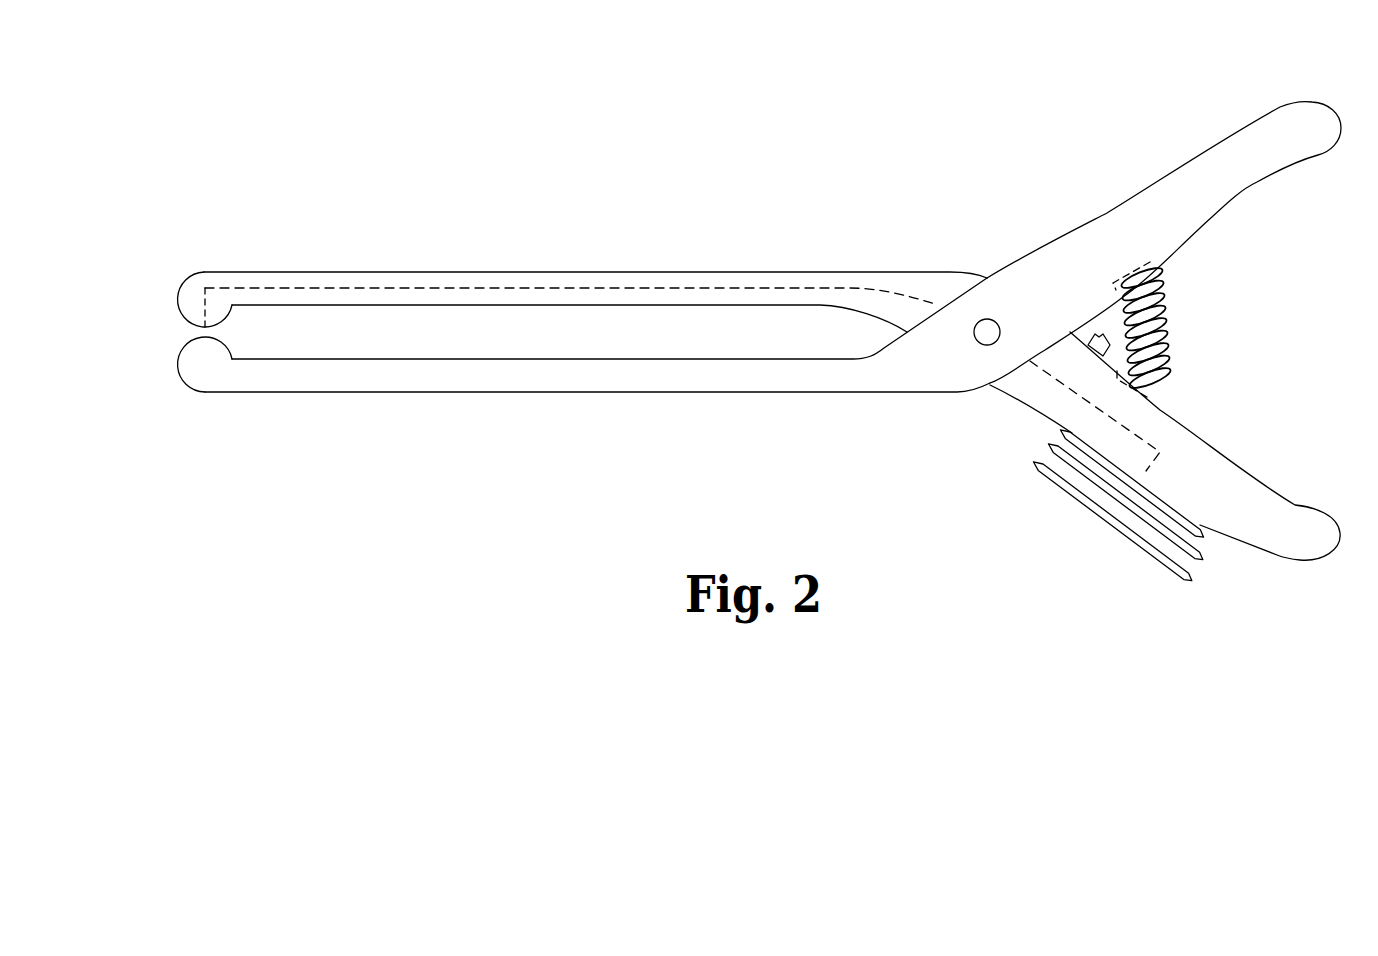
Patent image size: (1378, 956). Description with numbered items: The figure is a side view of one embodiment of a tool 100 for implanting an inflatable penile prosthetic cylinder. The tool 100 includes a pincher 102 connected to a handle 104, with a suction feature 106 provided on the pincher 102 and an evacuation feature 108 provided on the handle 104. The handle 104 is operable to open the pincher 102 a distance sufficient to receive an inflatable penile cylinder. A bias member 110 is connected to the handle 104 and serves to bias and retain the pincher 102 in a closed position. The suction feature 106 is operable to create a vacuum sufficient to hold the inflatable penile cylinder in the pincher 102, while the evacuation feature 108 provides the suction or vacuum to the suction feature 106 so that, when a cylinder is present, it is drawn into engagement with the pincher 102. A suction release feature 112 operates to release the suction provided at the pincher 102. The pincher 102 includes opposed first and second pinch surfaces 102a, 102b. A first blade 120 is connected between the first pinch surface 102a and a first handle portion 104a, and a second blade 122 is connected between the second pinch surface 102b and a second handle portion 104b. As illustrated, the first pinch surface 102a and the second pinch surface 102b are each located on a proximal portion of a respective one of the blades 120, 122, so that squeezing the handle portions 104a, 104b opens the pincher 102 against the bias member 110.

The tool 100 is at (658, 140).
The pincher 102 is at (167, 262).
The first pinch surface 102a is at (194, 288).
The second pinch surface 102b is at (203, 357).
The handle 104 is at (1183, 115).
The first handle portion 104a is at (1287, 535).
The second handle portion 104b is at (1120, 227).
The suction feature 106 is at (203, 328).
The evacuation feature 108 is at (1073, 478).
The bias member 110 is at (1163, 296).
The suction release feature 112 is at (1108, 341).
The first blade 120 is at (517, 280).
The second blade 122 is at (517, 382).